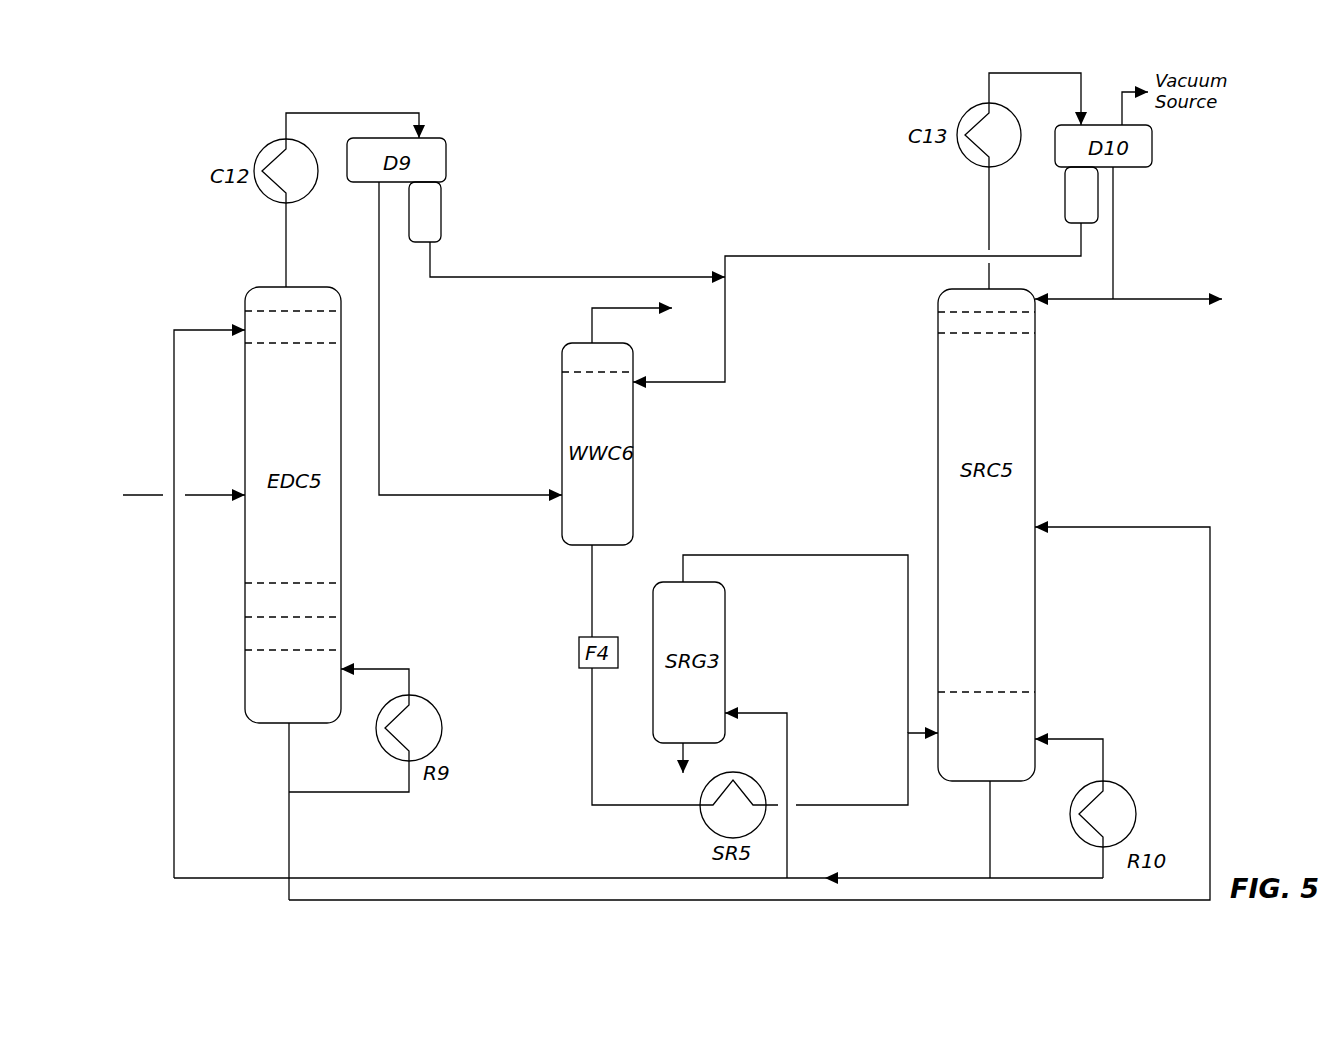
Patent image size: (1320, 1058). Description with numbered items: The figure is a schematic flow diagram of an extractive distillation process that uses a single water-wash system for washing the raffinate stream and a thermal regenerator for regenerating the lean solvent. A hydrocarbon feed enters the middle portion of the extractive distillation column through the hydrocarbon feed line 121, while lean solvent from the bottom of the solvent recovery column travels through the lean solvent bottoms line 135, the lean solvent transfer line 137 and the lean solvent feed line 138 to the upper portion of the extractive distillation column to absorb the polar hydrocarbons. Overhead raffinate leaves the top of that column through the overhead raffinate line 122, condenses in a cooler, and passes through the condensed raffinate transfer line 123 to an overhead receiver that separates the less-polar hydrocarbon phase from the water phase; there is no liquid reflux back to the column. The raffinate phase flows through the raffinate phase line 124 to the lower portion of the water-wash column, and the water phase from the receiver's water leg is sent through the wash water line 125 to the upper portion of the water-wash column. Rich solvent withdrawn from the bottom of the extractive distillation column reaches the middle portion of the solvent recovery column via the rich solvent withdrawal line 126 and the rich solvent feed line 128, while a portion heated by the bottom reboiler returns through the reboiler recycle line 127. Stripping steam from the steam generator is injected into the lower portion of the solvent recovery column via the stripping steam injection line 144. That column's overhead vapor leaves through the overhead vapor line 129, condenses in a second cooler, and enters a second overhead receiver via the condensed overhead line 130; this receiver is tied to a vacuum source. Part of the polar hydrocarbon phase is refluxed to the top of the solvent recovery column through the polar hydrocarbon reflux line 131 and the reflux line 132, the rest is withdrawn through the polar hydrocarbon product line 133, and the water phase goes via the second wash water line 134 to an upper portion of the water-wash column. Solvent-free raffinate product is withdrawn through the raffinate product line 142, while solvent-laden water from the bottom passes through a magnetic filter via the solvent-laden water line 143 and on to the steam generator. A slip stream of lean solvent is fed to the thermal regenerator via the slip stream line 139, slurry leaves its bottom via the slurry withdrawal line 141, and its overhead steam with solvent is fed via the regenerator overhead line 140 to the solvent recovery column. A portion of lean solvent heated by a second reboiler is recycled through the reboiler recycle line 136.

The hydrocarbon feed line 121 is at (215, 485).
The overhead raffinate line 122 is at (309, 245).
The condensed raffinate transfer line 123 is at (355, 112).
The raffinate phase line 124 is at (470, 341).
The wash water line from D9 125 is at (577, 262).
The rich solvent withdrawal line 126 is at (268, 811).
The reboiler recycle line 127 is at (375, 669).
The rich solvent feed line 128 is at (749, 699).
The SRC5 overhead vapor line 129 is at (966, 228).
The condensed overhead line 130 is at (1038, 99).
The polar hydrocarbon reflux line 131 is at (1136, 233).
The reflux line to SRC5 132 is at (1074, 287).
The polar hydrocarbon product line 133 is at (1167, 287).
The wash water line from D10 134 is at (857, 305).
The lean solvent bottoms line 135 is at (1013, 829).
The SRC5 reboiler recycle line 136 is at (1093, 757).
The lean solvent transfer line 137 is at (638, 867).
The lean solvent feed line 138 is at (209, 591).
The regenerator slip stream line 139 is at (779, 792).
The regenerator overhead line 140 is at (795, 644).
The slurry withdrawal line 141 is at (680, 773).
The solvent-free raffinate product line 142 is at (632, 322).
The solvent-laden water line 143 is at (646, 675).
The stripping steam injection line 144 is at (852, 766).